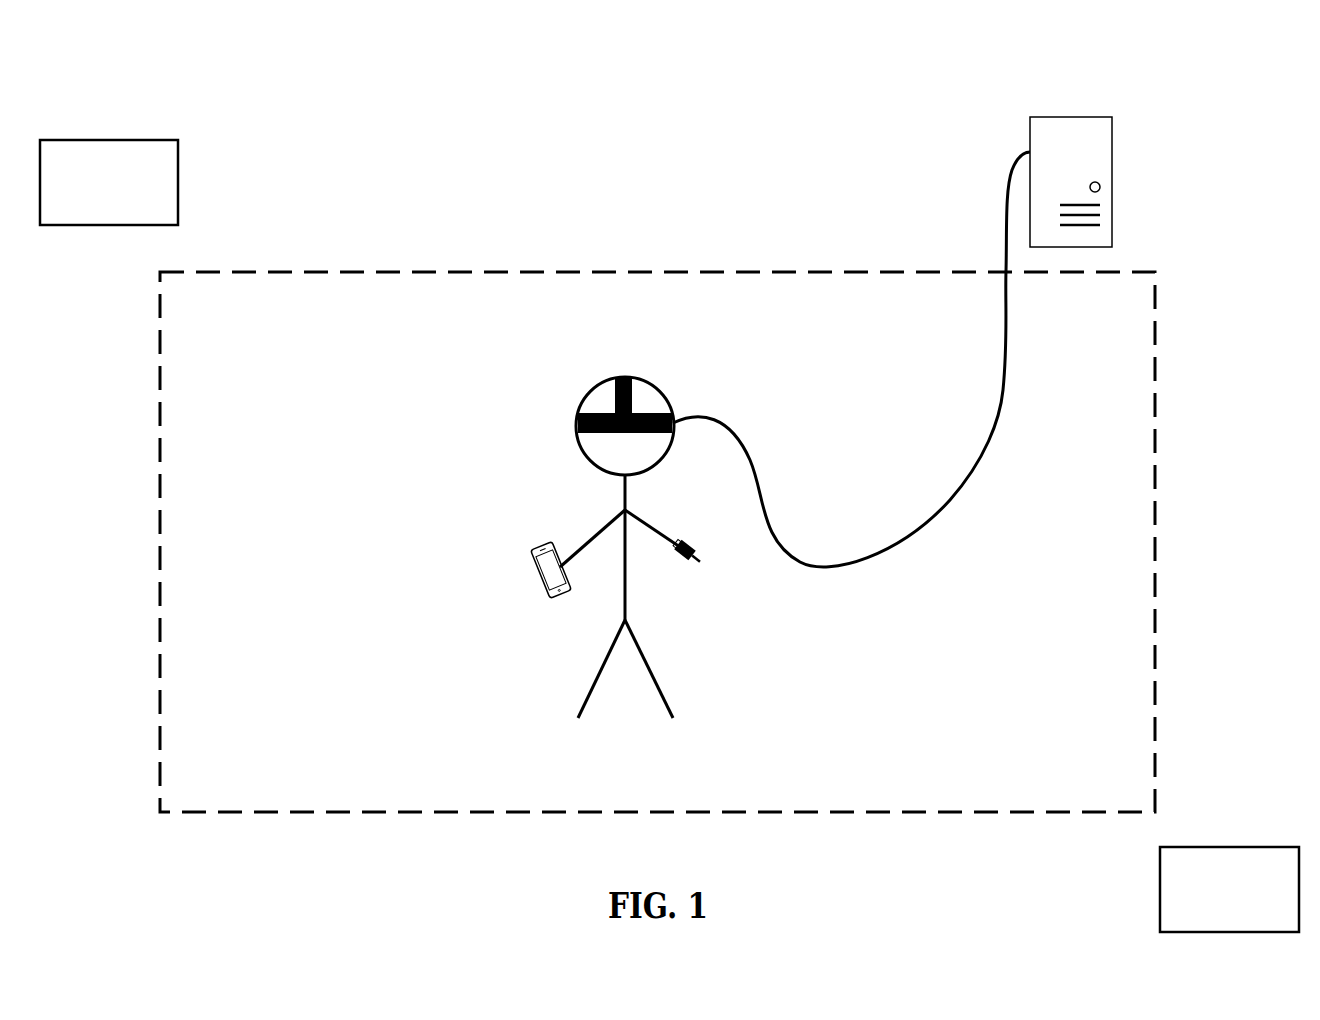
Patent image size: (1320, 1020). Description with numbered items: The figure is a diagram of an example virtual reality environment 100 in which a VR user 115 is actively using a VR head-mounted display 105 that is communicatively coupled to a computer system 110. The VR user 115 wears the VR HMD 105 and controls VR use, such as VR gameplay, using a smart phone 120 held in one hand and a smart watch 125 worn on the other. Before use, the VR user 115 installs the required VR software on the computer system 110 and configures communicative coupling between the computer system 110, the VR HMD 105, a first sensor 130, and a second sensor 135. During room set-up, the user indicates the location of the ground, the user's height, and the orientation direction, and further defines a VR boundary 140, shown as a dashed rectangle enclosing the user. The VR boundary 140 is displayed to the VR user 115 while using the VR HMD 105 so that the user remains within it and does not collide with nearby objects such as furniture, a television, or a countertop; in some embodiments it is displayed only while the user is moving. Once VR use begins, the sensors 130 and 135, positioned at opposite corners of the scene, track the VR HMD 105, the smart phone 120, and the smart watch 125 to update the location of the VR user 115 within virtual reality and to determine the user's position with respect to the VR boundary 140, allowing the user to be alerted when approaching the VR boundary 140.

The virtual reality environment 100 is at (250, 76).
The VR head-mounted display 105 is at (628, 375).
The computer system 110 is at (1112, 117).
The VR user 115 is at (607, 522).
The smart phone 120 is at (530, 552).
The smart watch 125 is at (677, 568).
The first sensor 130 is at (1229, 889).
The second sensor 135 is at (109, 182).
The VR boundary 140 is at (437, 270).